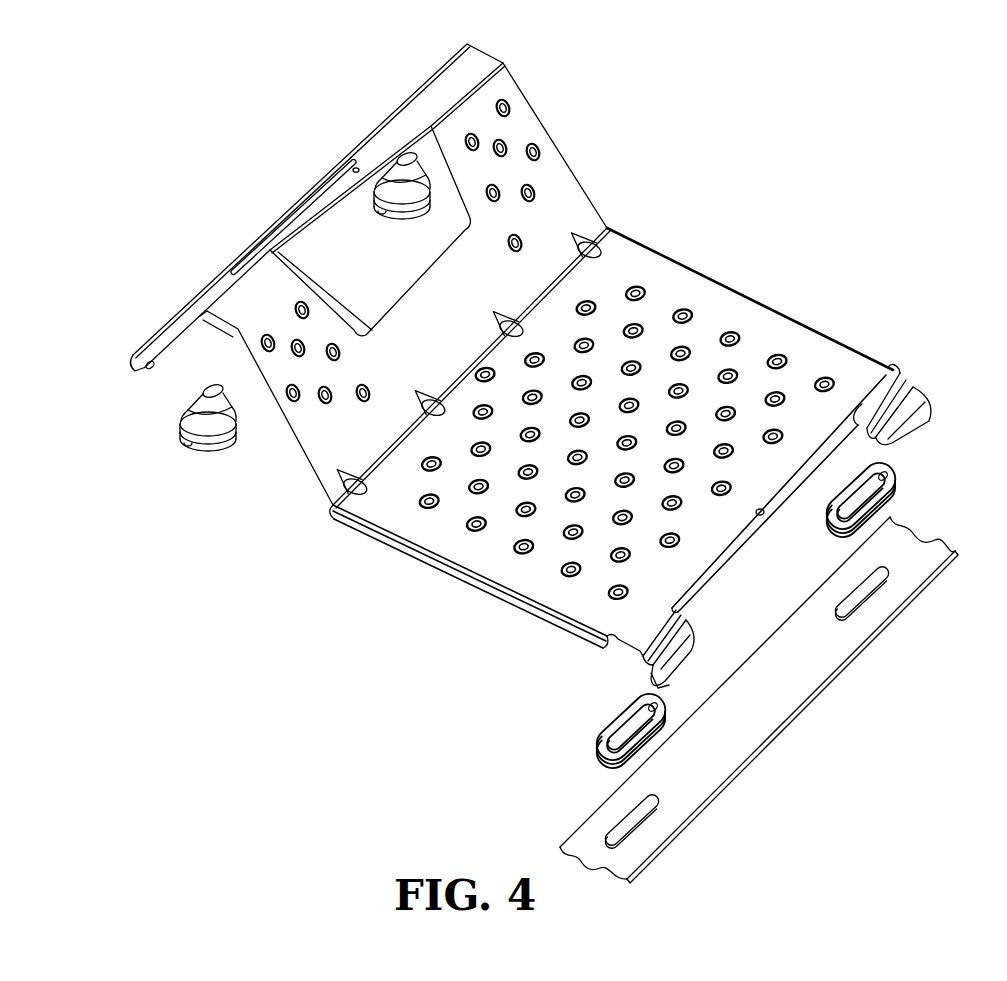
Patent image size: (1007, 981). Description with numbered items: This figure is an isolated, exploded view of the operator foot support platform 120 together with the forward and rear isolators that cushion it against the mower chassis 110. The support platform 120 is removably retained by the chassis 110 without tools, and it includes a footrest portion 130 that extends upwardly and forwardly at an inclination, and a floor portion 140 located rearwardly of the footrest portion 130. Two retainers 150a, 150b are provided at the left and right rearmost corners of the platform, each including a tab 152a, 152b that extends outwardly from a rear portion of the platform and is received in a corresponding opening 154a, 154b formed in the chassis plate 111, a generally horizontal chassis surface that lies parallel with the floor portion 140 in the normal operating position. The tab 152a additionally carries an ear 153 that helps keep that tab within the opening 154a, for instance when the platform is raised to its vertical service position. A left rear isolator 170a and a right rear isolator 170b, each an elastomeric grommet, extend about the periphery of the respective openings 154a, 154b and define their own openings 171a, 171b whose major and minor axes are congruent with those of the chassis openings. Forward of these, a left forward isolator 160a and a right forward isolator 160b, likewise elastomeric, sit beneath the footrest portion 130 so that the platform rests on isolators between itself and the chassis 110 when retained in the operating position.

The chassis 110 is at (771, 700).
The chassis plate 111 is at (840, 668).
The operator foot support platform 120 is at (611, 414).
The footrest portion 130 is at (527, 116).
The floor portion 140 is at (770, 337).
The retainer 150a is at (650, 649).
The retainer 150b is at (925, 371).
The tab 152a is at (694, 628).
The tab 152b is at (923, 401).
The ear 153 is at (634, 663).
The opening 154a is at (633, 827).
The opening 154b is at (858, 594).
The forward isolator 160a is at (185, 440).
The forward isolator 160b is at (384, 163).
The rear isolator 170a is at (644, 753).
The rear isolator 170b is at (904, 496).
The opening 171a is at (648, 722).
The opening 171b is at (893, 476).